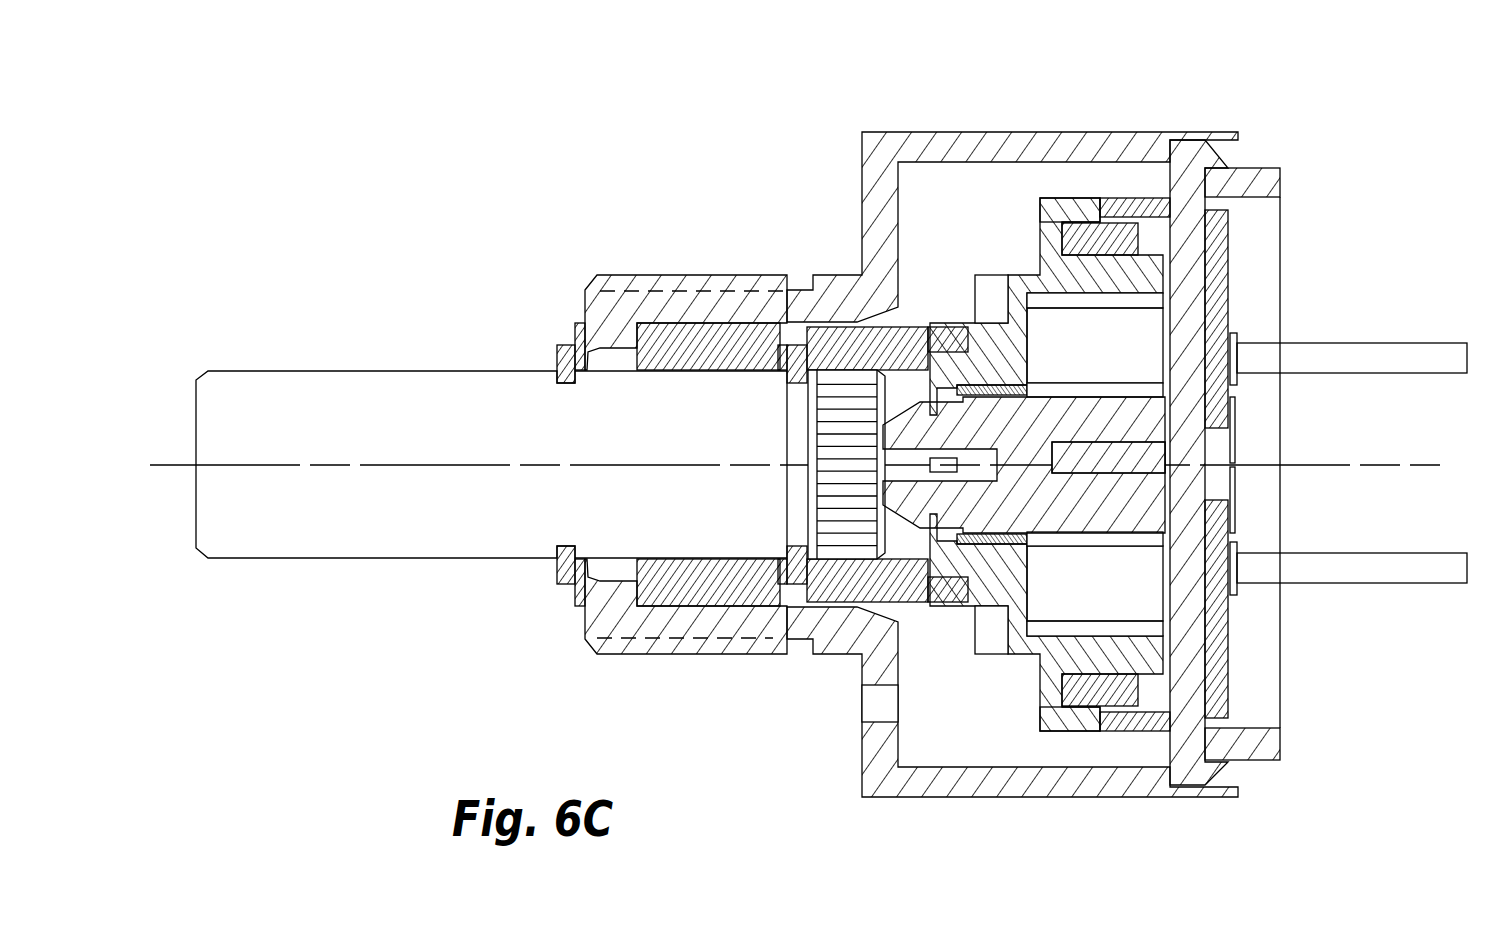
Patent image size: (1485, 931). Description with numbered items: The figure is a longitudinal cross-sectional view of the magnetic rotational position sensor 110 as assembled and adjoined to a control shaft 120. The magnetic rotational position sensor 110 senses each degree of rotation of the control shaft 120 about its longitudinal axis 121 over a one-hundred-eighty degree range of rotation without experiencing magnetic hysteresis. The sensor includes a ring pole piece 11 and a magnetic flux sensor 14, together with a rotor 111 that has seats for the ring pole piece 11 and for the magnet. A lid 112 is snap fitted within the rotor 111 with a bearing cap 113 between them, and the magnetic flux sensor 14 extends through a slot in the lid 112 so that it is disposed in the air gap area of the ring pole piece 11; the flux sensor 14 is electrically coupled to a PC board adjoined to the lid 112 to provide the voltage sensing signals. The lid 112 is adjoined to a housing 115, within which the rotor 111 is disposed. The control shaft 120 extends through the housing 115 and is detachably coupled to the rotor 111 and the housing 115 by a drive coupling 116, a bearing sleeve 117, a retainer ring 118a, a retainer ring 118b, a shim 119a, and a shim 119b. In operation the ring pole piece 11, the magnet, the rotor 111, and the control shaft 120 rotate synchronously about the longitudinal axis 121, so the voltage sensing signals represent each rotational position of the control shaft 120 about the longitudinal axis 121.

The magnetic rotational position sensor 110 is at (1286, 91).
The ring pole piece 11 is at (1120, 238).
The magnetic flux sensor 14 is at (1163, 455).
The rotor 111 is at (1068, 208).
The lid 112 is at (1280, 185).
The bearing cap 113 is at (987, 555).
The housing 115 is at (643, 654).
The drive coupling 116 is at (848, 654).
The bearing sleeve 117 is at (748, 600).
The retainer ring 118a is at (557, 360).
The retainer ring 118b is at (797, 344).
The shim 119a is at (567, 603).
The shim 119b is at (785, 344).
The control shaft 120 is at (417, 558).
The longitudinal axis 121 is at (172, 464).